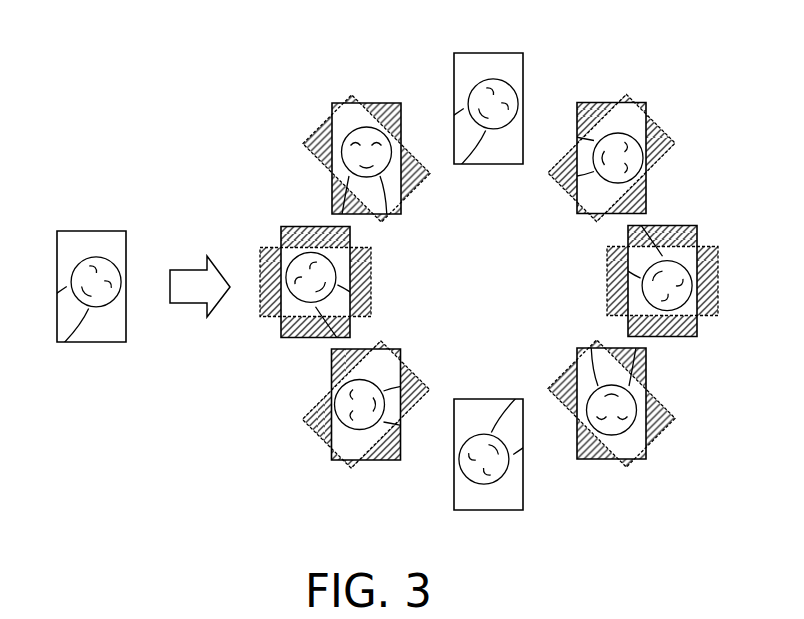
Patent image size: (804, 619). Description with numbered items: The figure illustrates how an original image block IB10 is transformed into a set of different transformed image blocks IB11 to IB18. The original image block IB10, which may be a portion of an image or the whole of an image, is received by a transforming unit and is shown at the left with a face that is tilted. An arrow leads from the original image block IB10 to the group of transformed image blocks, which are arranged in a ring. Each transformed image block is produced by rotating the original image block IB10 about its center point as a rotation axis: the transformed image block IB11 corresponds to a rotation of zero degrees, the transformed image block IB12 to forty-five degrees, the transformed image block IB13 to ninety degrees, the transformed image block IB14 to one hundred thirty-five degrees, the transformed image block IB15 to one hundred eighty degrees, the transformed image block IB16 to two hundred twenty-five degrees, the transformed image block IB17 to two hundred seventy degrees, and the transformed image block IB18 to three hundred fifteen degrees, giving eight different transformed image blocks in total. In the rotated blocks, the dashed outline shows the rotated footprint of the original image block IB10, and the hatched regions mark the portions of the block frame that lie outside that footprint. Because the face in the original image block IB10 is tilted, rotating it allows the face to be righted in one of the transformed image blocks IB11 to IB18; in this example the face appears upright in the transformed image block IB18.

The original image block IB10 is at (105, 231).
The transformed image block IB11 is at (493, 53).
The transformed image block IB12 is at (640, 103).
The transformed image block IB13 is at (676, 226).
The transformed image block IB14 is at (647, 358).
The transformed image block IB15 is at (487, 510).
The transformed image block IB16 is at (395, 349).
The transformed image block IB17 is at (350, 235).
The transformed image block IB18 is at (369, 103).